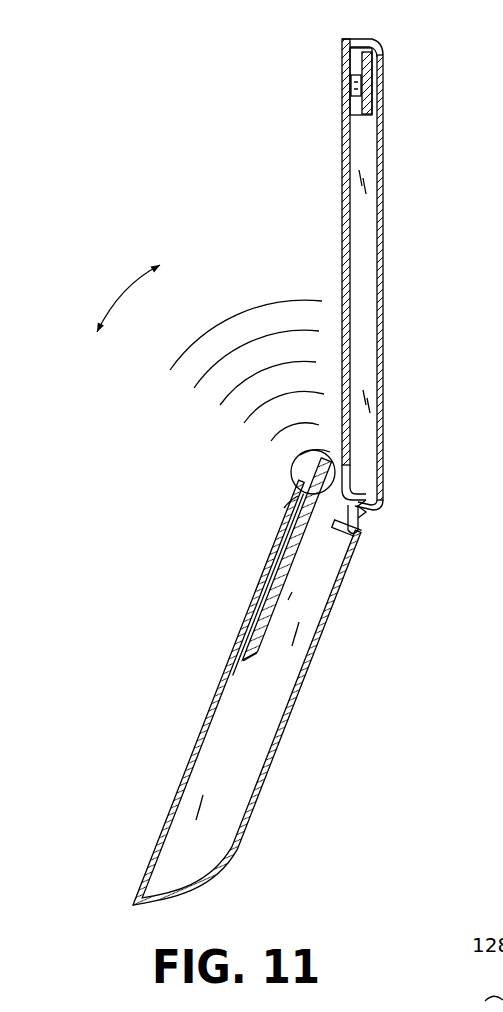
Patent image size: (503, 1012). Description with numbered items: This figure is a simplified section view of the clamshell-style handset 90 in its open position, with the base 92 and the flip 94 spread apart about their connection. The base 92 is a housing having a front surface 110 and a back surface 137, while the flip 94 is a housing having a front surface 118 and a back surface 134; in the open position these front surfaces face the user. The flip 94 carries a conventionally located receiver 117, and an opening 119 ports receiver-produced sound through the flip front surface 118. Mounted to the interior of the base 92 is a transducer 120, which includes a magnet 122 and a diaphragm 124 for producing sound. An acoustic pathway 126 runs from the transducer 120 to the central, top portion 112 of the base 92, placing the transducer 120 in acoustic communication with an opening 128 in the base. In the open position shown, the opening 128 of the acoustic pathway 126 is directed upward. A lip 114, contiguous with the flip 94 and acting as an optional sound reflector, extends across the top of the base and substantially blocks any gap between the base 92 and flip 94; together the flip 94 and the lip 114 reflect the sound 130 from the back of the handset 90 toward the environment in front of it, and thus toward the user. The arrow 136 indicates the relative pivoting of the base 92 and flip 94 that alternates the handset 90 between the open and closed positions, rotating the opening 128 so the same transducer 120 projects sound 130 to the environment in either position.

The handset 90 is at (222, 112).
The base 92 is at (140, 870).
The flip 94 is at (383, 150).
The front surface of base 110 is at (178, 782).
The central, top portion of base 112 is at (292, 474).
The lip 114 is at (362, 538).
The receiver 117 is at (379, 50).
The front surface of flip 118 is at (343, 183).
The opening 119 is at (343, 93).
The transducer 120 is at (250, 634).
The magnet 122 is at (292, 592).
The diaphragm 124 is at (262, 656).
The acoustic pathway 126 is at (284, 508).
The opening 128 is at (310, 452).
The sound 130 is at (262, 307).
The back surface of flip 134 is at (383, 275).
The arrow 136 is at (120, 300).
The back surface of base 137 is at (262, 792).